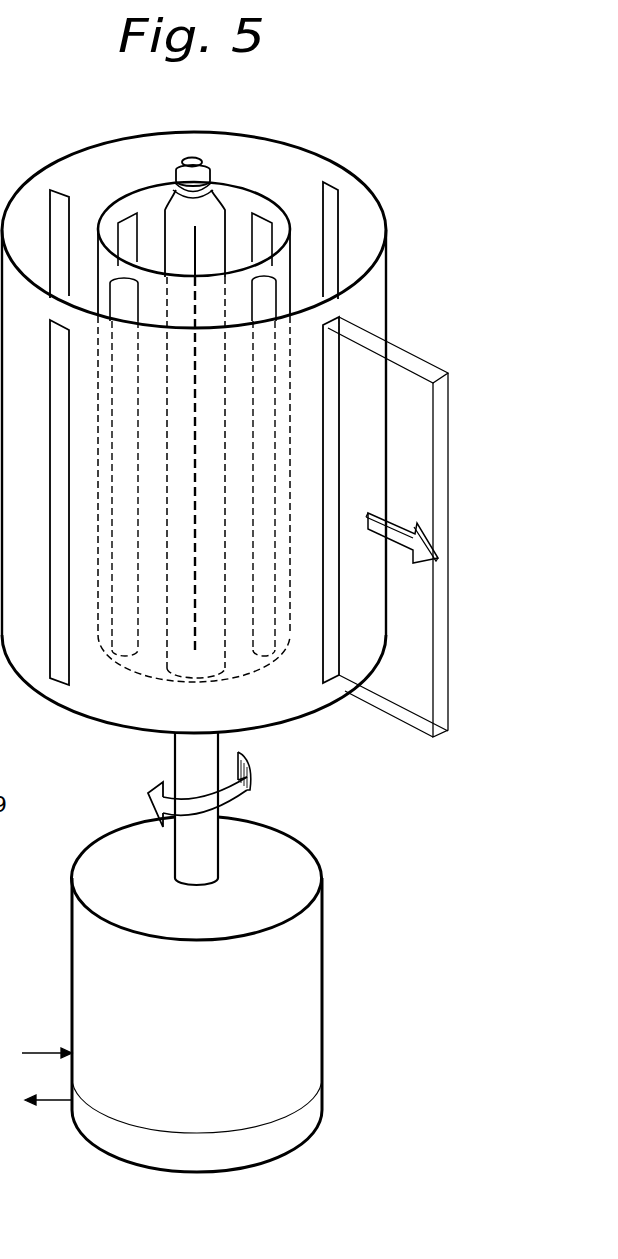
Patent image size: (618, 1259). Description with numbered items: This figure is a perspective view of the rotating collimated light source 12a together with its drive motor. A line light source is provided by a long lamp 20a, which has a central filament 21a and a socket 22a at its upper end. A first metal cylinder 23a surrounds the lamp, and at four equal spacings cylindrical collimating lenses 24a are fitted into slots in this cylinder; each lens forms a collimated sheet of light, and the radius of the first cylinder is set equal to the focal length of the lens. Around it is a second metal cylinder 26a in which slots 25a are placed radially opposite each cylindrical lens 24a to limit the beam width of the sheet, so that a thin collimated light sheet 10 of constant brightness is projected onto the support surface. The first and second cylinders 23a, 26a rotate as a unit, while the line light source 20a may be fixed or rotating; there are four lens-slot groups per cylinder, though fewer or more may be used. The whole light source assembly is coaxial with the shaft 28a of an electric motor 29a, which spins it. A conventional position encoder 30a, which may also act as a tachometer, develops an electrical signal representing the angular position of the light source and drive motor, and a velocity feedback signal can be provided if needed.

The light sheet 10 is at (405, 688).
The light source 12a is at (85, 726).
The lamp 20a is at (170, 655).
The central filament 21a is at (192, 250).
The socket 22a is at (214, 178).
The first metal cylinder 23a is at (262, 190).
The cylindrical collimating lens 24a is at (258, 303).
The slot 25a is at (328, 424).
The second metal cylinder 26a is at (386, 280).
The shaft 28a is at (181, 763).
The electric motor 29a is at (303, 972).
The position encoder 30a is at (315, 1103).